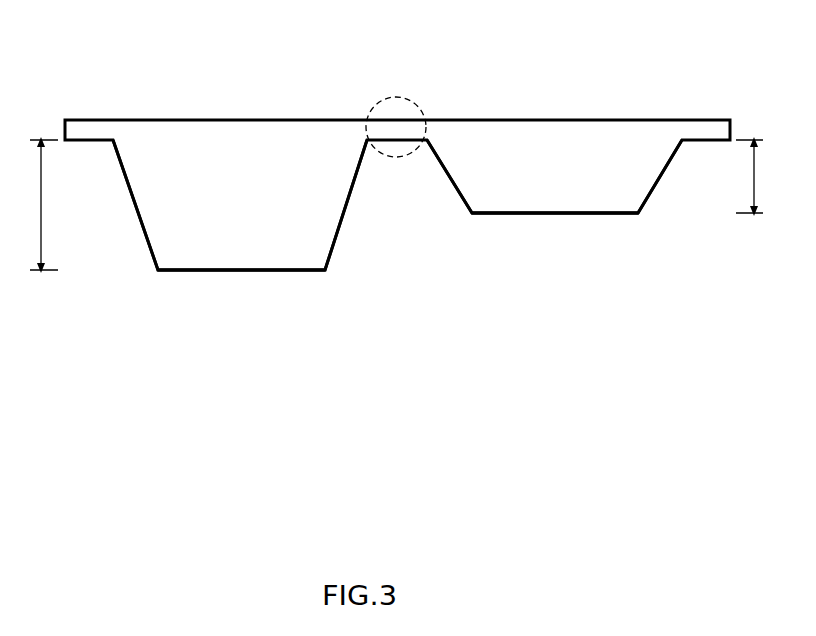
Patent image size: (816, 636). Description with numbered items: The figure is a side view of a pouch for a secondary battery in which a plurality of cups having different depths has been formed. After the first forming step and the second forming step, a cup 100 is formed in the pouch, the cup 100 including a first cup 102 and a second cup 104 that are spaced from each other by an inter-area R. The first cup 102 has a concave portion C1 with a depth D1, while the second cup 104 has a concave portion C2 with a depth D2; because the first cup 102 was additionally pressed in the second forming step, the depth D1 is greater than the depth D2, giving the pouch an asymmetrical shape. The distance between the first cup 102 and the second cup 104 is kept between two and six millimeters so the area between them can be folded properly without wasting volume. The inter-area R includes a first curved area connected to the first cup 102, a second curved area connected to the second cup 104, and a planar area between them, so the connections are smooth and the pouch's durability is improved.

The cup 100 is at (523, 288).
The first cup 102 is at (284, 253).
The second cup 104 is at (522, 198).
The concave portion C1 is at (214, 241).
The concave portion C2 is at (600, 180).
The depth D1 is at (31, 205).
The depth D2 is at (762, 176).
The inter-area R is at (396, 97).